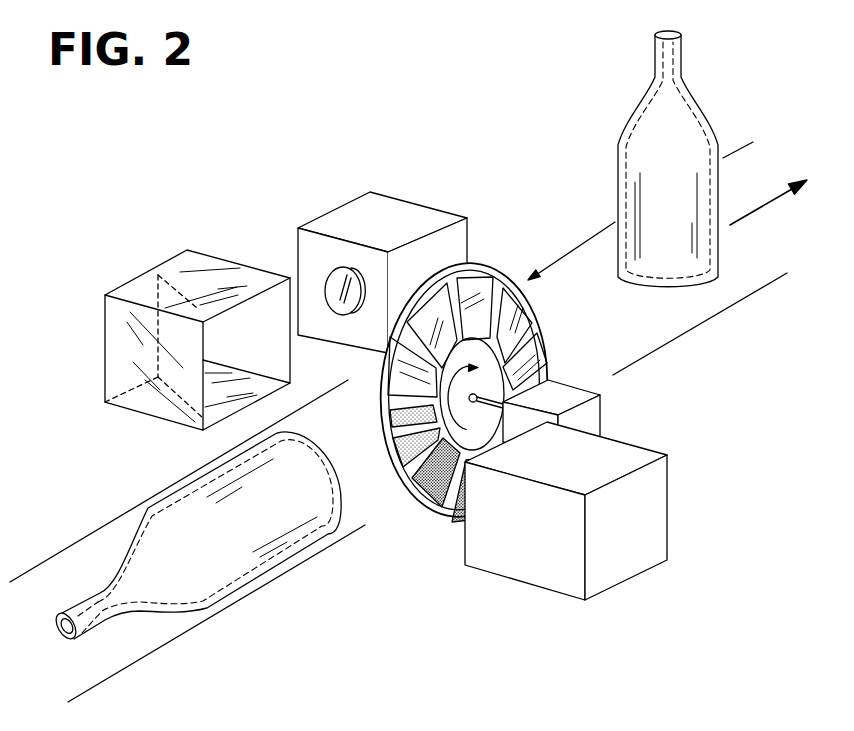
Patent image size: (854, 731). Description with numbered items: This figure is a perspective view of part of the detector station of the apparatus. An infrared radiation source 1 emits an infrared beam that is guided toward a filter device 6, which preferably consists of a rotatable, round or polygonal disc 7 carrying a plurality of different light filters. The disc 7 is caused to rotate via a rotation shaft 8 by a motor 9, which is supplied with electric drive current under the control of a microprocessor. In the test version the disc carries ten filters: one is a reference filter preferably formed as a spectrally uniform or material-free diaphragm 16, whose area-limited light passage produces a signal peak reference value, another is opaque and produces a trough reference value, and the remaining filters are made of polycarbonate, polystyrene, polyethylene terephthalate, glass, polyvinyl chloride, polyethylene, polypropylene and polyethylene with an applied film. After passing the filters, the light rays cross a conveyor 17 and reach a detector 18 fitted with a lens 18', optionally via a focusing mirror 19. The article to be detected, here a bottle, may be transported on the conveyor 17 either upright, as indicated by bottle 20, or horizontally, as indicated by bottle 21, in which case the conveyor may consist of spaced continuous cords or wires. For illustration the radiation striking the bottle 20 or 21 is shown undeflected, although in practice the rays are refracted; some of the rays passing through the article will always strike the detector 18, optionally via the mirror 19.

The infrared radiation source 1 is at (532, 543).
The filter device 6 is at (571, 246).
The rotatable disc 7 is at (390, 403).
The rotation shaft 8 is at (390, 425).
The motor 9 is at (558, 395).
The diaphragm 16 is at (387, 453).
The conveyor 17 is at (643, 342).
The detector 18 is at (382, 255).
The lens 18' is at (310, 255).
The focusing mirror 19 is at (170, 376).
The upright bottle 20 is at (663, 110).
The horizontal bottle 21 is at (228, 563).